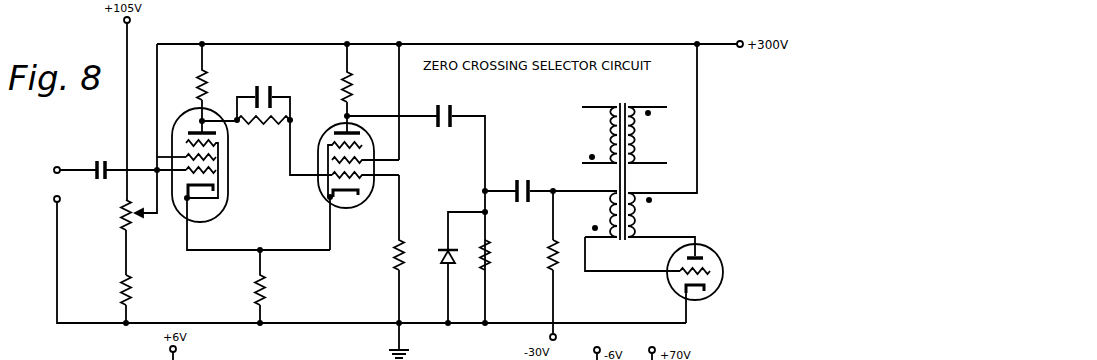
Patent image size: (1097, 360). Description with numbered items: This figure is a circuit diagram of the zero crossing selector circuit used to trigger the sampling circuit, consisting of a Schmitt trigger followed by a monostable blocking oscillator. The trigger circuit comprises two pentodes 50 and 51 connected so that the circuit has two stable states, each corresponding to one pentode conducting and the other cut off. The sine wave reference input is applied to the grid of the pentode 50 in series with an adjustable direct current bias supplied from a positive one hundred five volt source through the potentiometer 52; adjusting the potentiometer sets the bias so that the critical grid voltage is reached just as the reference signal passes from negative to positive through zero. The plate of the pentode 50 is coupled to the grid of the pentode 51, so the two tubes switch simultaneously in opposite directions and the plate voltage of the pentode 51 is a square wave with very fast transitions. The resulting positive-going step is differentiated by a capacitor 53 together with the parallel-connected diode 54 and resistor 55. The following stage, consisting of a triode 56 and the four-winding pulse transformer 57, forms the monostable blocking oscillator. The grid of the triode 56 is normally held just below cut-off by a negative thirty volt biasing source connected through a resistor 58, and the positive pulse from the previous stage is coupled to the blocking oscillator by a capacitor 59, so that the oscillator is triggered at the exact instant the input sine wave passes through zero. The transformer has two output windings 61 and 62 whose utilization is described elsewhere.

The pentode 50 is at (229, 207).
The pentode 51 is at (368, 210).
The potentiometer 52 is at (118, 225).
The capacitor 53 is at (446, 107).
The diode 54 is at (440, 266).
The resistor 55 is at (492, 260).
The triode 56 is at (669, 292).
The four-winding pulse transformer 57 is at (618, 161).
The resistor 58 is at (556, 266).
The capacitor 59 is at (521, 176).
The output winding 61 is at (601, 131).
The output winding 62 is at (645, 153).